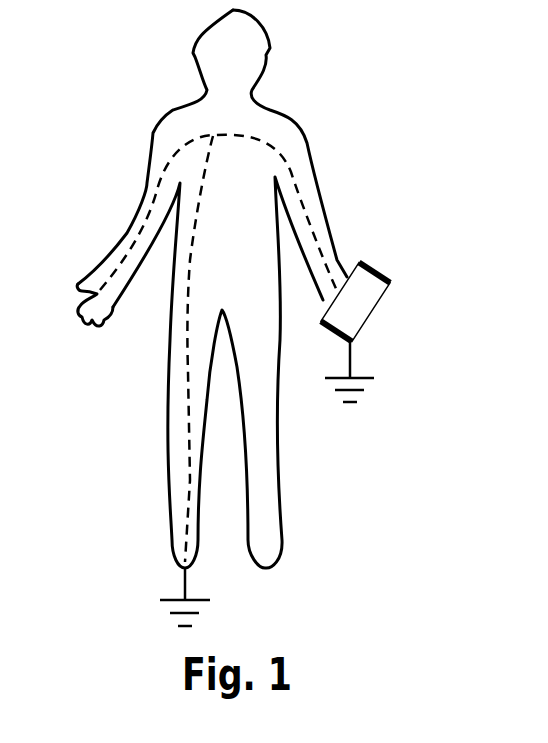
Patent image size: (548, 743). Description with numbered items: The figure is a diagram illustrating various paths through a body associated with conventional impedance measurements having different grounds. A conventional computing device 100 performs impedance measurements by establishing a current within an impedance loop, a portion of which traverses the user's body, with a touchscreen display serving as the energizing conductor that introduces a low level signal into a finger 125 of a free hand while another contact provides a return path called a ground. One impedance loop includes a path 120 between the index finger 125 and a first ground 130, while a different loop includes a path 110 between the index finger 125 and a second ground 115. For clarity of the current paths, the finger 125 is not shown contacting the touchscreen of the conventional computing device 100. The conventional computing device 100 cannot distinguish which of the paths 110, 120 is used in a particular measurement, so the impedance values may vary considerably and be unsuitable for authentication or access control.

The conventional computing device 100 is at (400, 278).
The path 110 is at (290, 162).
The second ground 115 is at (375, 386).
The path 120 is at (183, 373).
The finger 125 is at (72, 303).
The first ground 130 is at (165, 615).